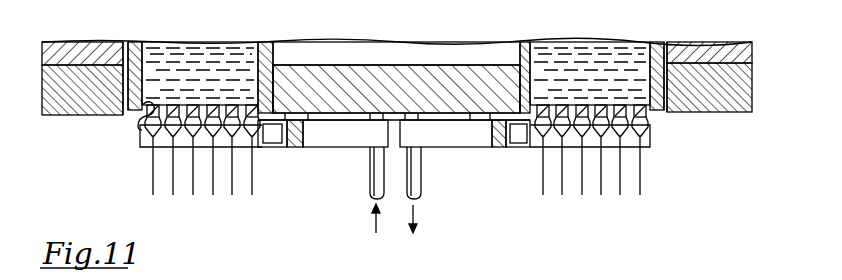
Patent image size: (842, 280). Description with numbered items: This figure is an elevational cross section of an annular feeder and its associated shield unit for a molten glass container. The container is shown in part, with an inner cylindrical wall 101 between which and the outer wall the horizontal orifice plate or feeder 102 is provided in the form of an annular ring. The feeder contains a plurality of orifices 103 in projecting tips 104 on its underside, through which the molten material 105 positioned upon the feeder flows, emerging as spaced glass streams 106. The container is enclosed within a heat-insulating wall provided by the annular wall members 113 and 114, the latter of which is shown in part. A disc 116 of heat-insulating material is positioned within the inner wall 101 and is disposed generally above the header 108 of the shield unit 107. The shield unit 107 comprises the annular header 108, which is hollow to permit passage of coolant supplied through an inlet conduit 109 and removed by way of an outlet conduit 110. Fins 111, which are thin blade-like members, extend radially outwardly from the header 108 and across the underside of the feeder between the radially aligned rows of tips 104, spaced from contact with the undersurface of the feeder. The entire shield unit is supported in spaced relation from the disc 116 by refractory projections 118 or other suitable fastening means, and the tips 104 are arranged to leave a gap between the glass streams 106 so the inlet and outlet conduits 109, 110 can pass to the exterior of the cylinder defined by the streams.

The inner cylindrical wall 101 is at (263, 42).
The feeder 102 is at (654, 110).
The orifices 103 is at (140, 113).
The projecting tips 104 is at (138, 130).
The molten material 105 is at (220, 50).
The glass streams 106 is at (238, 192).
The shield unit 107 is at (500, 159).
The annular header 108 is at (490, 135).
The inlet conduit 109 is at (369, 178).
The outlet conduit 110 is at (418, 183).
The fins 111 is at (650, 136).
The annular wall member 113 is at (85, 105).
The annular wall member 114 is at (85, 50).
The disc 116 is at (360, 73).
The refractory projections 118 is at (298, 128).